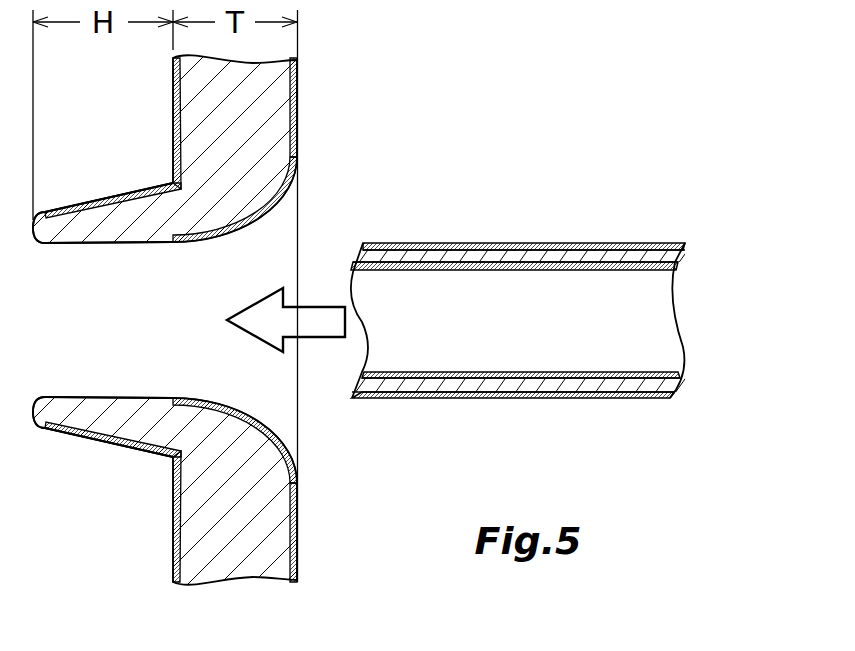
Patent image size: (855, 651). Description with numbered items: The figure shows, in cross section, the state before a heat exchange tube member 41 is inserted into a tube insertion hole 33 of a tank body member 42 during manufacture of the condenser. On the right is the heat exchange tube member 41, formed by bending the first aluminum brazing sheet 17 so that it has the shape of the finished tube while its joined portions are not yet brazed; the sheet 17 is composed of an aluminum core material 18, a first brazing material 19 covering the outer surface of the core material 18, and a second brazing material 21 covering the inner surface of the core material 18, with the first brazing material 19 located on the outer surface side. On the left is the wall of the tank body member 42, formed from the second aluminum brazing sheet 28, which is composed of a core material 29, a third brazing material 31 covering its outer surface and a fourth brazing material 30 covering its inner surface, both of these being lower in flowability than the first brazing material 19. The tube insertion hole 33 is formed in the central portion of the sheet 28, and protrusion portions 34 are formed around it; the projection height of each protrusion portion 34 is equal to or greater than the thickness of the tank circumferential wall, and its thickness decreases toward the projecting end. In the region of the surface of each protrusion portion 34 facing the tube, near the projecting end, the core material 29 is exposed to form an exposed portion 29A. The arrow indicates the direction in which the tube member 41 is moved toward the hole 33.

The first aluminum brazing sheet 17 is at (556, 268).
The core material 18 is at (675, 258).
The first brazing material 19 is at (665, 242).
The second brazing material 21 is at (653, 267).
The second aluminum brazing sheet 28 is at (427, 325).
The core material 29 is at (297, 100).
The exposed portion 29A is at (123, 243).
The fourth brazing material 30 is at (173, 537).
The third brazing material 31 is at (298, 540).
The tube insertion hole 33 is at (267, 423).
The protrusion portion 34 is at (72, 213).
The heat exchange tube member 41 is at (554, 268).
The tank body member 42 is at (168, 565).